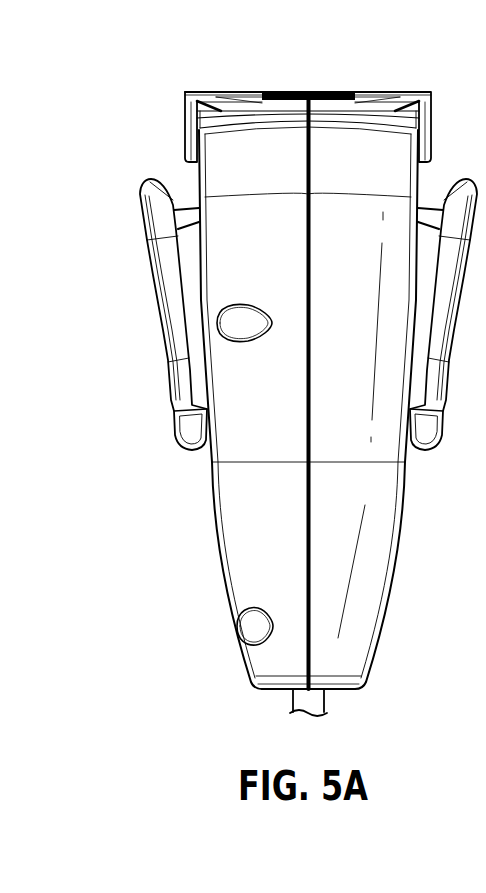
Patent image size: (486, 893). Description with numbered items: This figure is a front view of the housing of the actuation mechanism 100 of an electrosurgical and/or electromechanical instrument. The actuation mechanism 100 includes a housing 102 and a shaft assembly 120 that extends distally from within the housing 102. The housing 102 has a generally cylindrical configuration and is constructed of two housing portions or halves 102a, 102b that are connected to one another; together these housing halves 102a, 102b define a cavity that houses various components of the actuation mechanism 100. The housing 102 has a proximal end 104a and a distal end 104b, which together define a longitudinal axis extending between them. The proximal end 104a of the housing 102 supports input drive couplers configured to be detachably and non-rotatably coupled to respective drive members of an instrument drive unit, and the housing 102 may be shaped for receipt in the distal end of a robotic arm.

The actuation mechanism 100 is at (330, 70).
The housing 102 is at (143, 345).
The housing half 102a is at (217, 534).
The housing half 102b is at (402, 535).
The proximal end 104a is at (431, 92).
The distal end 104b is at (340, 690).
The shaft assembly 120 is at (282, 707).